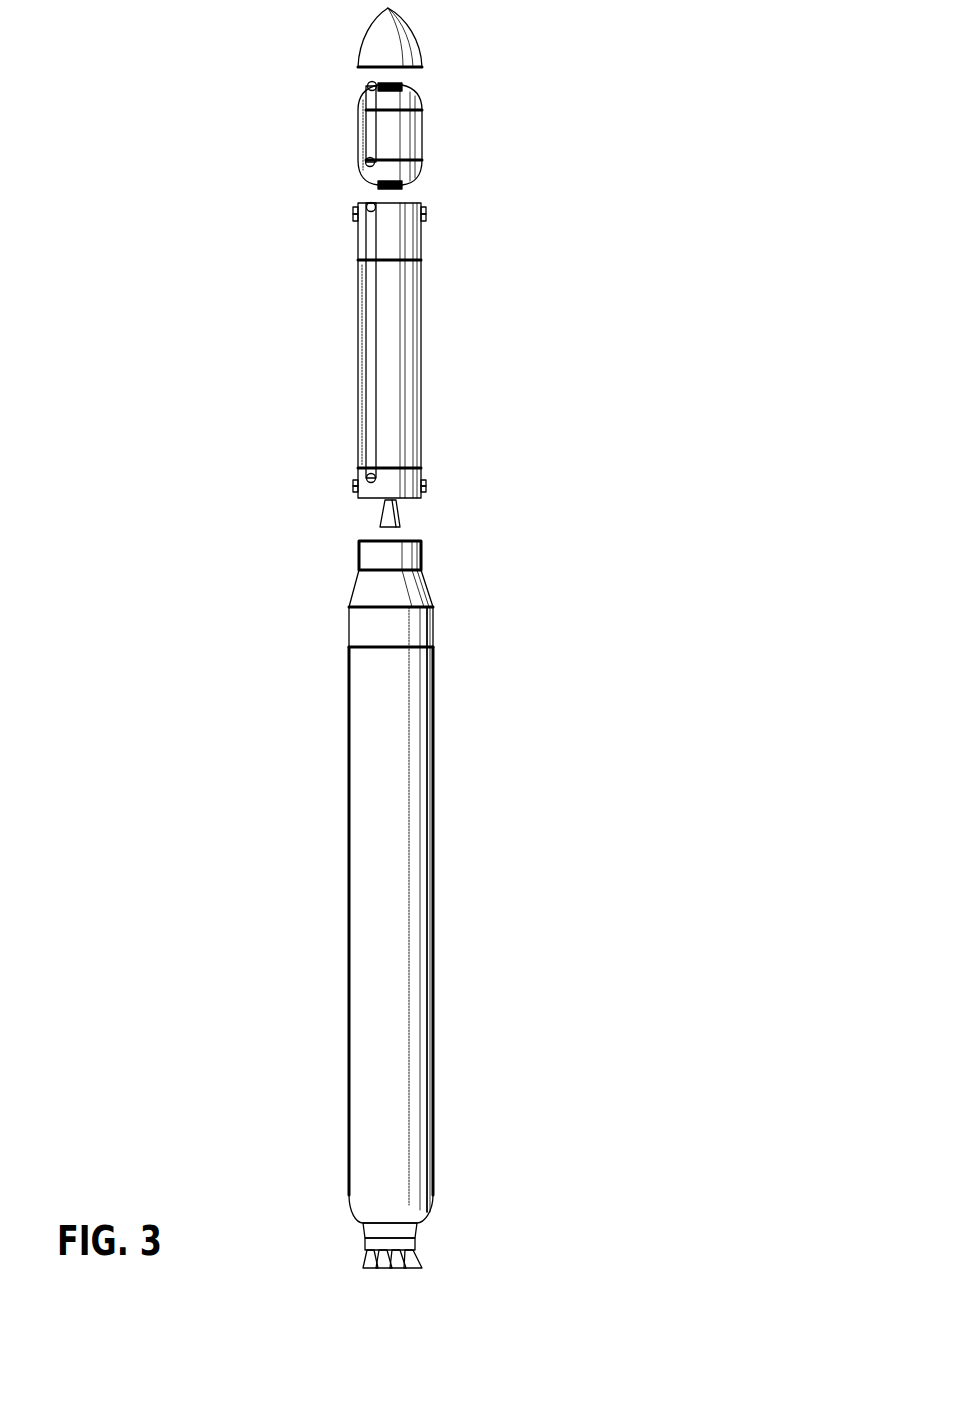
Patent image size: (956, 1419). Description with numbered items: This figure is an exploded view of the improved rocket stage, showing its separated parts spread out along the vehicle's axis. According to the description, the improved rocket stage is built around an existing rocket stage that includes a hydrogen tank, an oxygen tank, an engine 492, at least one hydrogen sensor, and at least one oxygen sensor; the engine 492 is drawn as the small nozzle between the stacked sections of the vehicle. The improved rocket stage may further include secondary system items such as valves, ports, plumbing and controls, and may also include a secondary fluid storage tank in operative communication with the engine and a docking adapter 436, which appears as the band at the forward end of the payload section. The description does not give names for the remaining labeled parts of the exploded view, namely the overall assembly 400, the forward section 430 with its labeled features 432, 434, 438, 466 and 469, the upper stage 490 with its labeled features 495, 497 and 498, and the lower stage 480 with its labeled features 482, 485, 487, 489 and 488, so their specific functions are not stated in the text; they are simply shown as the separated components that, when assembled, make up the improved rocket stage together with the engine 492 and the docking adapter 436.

The launch vehicle 400 is at (202, 60).
The payload fairing assembly 430 is at (540, 58).
The aft fairing band 432 is at (404, 185).
The hinge fitting 434 is at (372, 172).
The docking adapter 436 is at (403, 86).
The fairing half 438 is at (370, 22).
The rail 466 is at (370, 134).
The hinge pin 469 is at (367, 85).
The first stage 480 is at (546, 496).
The interstage adapter 482 is at (372, 585).
The first stage forward section 485 is at (435, 655).
The first stage body 487 is at (400, 890).
The first stage aft section 489 is at (432, 1200).
The first stage engines 488 is at (363, 1267).
The second stage 490 is at (543, 163).
The engine 492 is at (400, 517).
The second stage forward section 495 is at (396, 230).
The second stage aft section 497 is at (393, 493).
The second stage body 498 is at (396, 336).